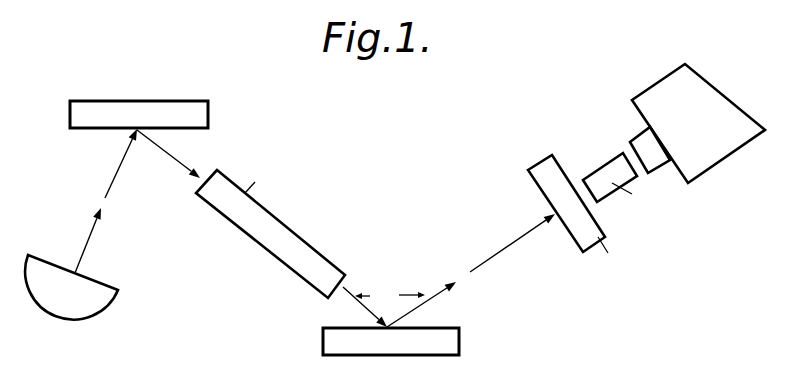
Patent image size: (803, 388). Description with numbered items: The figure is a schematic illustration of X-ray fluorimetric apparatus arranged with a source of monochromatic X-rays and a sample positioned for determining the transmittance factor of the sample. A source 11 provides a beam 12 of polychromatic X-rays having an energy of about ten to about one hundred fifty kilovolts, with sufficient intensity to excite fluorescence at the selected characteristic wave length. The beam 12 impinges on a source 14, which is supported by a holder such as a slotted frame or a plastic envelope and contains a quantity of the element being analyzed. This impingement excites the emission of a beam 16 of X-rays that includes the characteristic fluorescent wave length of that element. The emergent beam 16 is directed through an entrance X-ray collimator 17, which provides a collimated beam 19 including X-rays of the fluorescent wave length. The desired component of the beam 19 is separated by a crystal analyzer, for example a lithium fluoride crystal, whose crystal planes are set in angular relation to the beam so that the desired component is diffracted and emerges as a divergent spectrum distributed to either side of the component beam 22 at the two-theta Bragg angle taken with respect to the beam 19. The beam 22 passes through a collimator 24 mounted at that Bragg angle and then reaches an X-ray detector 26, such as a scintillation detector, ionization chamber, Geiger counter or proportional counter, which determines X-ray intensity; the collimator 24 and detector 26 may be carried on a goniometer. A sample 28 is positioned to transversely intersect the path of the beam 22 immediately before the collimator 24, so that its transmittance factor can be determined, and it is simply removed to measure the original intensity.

The source 11 is at (77, 322).
The beam of polychromatic X-rays 12 is at (112, 187).
The source 14 is at (144, 99).
The beam of X-rays 16 is at (168, 149).
The entrance X-ray collimator 17 is at (276, 219).
The collimated beam 19 is at (345, 290).
The component beam 22 is at (504, 244).
The collimator 24 is at (600, 160).
The X-ray detector 26 is at (717, 100).
The sample 28 is at (550, 155).